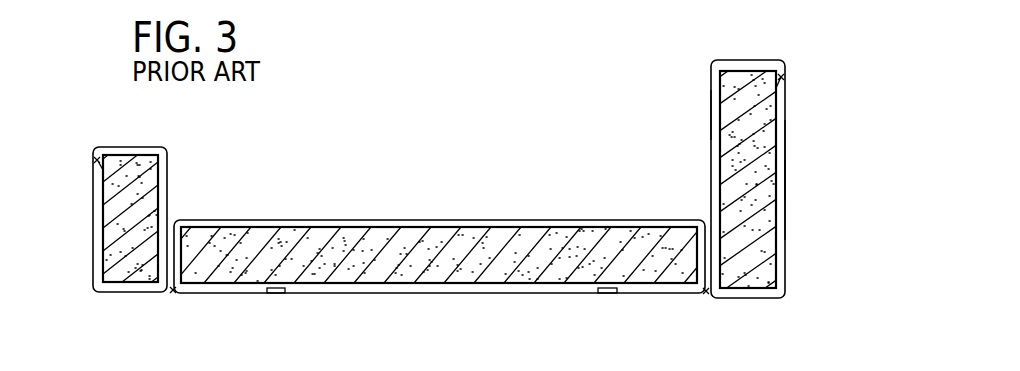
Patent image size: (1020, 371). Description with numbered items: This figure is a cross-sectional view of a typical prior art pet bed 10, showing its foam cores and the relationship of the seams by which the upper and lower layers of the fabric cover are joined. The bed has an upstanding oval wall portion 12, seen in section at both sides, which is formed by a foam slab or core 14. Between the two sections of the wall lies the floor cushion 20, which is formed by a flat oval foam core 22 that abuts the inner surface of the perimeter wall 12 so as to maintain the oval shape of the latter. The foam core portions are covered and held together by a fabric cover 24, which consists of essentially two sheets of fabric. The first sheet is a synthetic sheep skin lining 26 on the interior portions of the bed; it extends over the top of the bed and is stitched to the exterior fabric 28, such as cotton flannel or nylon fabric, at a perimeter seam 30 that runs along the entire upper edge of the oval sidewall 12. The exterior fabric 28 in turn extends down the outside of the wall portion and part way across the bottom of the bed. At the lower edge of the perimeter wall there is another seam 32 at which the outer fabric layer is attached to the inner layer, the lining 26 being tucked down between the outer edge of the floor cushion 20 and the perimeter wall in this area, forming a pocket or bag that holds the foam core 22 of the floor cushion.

The pet bed 10 is at (125, 120).
The upstanding oval wall portion 12 is at (797, 137).
The foam slab or core 14 is at (147, 198).
The floor cushion 20 is at (428, 214).
The flat oval foam core 22 is at (490, 275).
The fabric cover 24 is at (785, 162).
The synthetic sheep skin lining 26 is at (285, 292).
The exterior fabric 28 is at (785, 187).
The perimeter seam 30 is at (97, 161).
The seam 32 is at (167, 291).